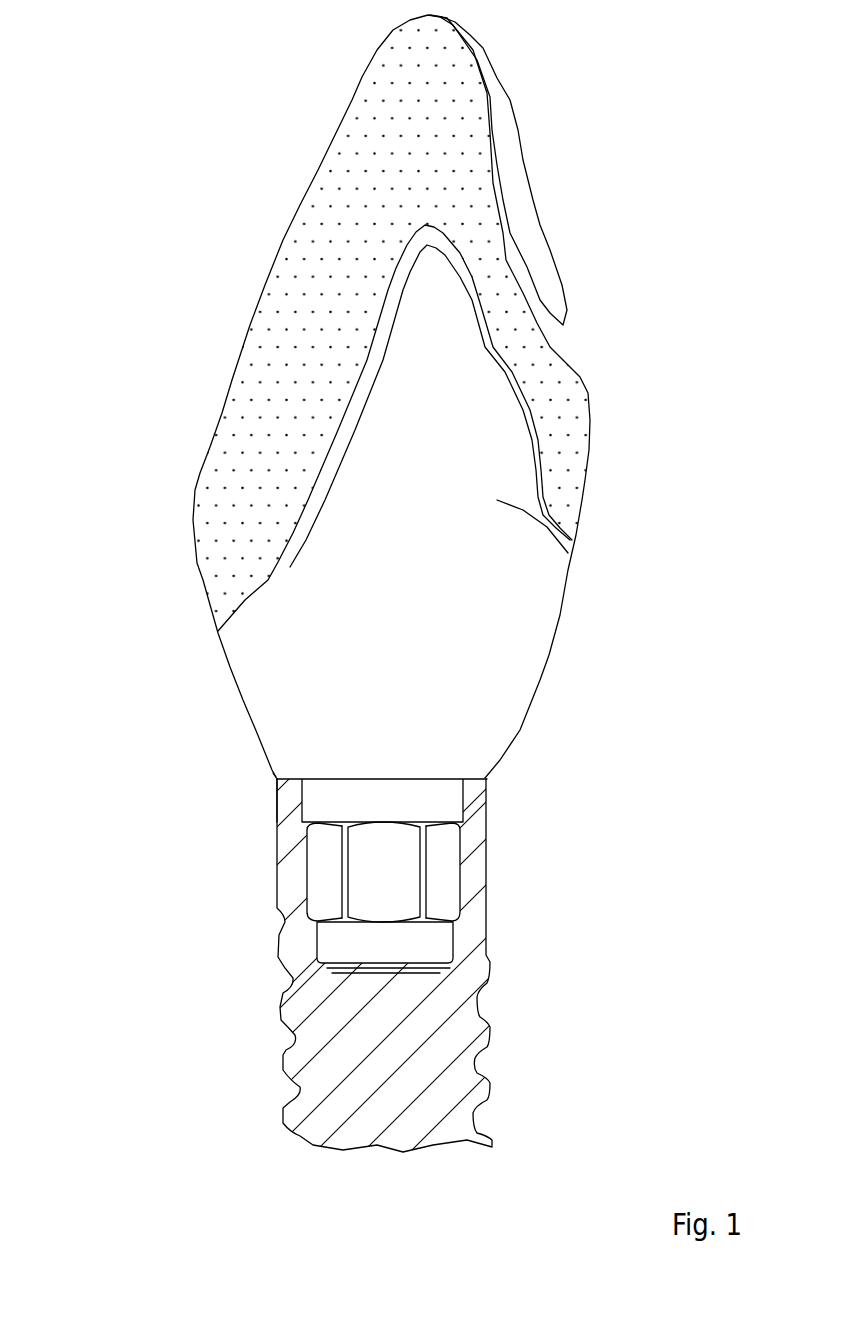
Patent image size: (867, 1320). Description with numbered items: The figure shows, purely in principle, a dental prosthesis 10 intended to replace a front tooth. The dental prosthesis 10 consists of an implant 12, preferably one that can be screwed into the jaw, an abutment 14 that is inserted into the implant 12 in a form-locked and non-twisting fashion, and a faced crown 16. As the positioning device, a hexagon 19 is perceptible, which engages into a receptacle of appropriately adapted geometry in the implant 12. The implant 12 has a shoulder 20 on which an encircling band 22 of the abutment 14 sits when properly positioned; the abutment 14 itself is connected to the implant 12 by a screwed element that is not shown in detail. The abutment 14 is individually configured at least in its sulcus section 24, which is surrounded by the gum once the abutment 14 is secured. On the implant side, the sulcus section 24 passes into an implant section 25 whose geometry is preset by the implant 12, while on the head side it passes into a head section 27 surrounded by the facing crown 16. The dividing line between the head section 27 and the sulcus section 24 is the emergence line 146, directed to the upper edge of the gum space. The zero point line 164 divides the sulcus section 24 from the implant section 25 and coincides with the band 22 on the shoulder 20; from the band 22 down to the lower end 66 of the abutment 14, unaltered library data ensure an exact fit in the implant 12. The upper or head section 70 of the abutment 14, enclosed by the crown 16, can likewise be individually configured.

The dental prosthesis 10 is at (165, 1092).
The implant 12 is at (290, 893).
The abutment 14 is at (472, 695).
The faced crown 16 is at (433, 128).
The hexagon 19 is at (427, 887).
The shoulder 20 is at (275, 786).
The encircling band 22 is at (273, 775).
The sulcus section 24 is at (480, 648).
The implant section 25 is at (448, 848).
The head section 27 is at (435, 345).
The lower end 66 is at (420, 977).
The head section 70 is at (465, 420).
The emergence line 146 is at (222, 634).
The zero point line 164 is at (485, 782).